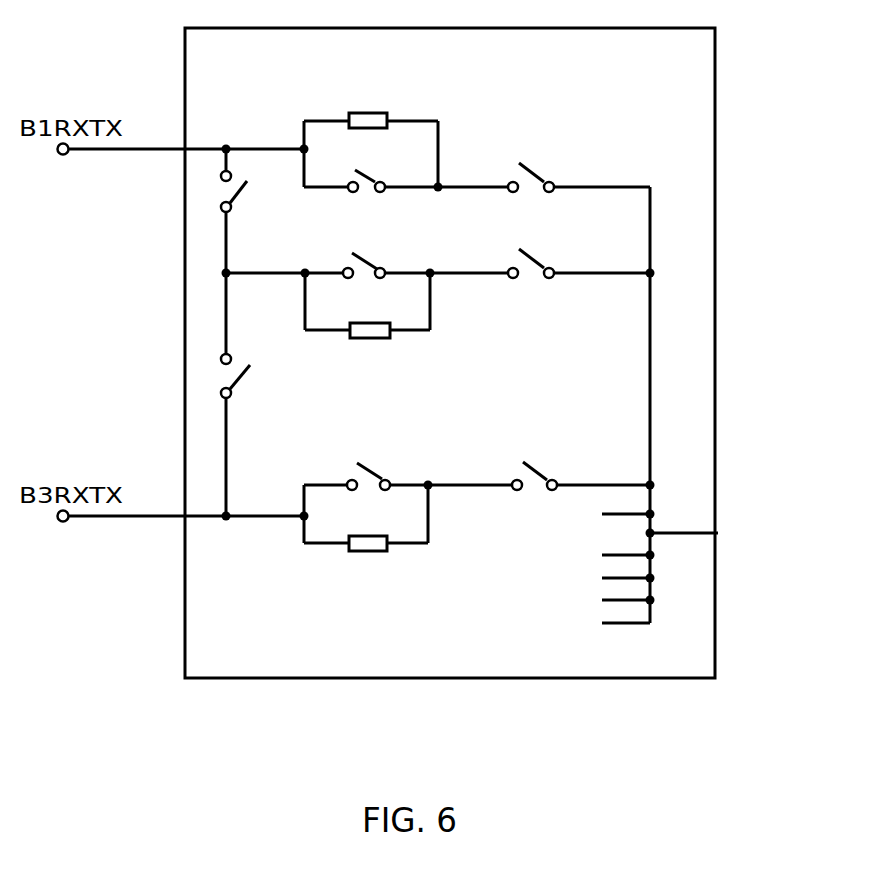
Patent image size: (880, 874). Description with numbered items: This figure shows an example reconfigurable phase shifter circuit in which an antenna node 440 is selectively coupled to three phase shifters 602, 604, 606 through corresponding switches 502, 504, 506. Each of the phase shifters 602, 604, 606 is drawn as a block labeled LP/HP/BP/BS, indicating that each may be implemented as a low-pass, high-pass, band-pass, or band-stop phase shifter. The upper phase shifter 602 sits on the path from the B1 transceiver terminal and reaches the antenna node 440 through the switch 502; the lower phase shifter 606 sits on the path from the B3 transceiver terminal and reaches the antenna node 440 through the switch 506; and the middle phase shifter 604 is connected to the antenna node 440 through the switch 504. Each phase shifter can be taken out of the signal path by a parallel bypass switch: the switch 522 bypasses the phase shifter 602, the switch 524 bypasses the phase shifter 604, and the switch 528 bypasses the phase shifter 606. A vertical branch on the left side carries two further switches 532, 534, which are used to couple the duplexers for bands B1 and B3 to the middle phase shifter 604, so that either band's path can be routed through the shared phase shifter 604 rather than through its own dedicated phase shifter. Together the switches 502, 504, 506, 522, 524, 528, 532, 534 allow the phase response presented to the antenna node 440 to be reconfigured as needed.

The phase shifter 602 is at (389, 117).
The phase shifter 604 is at (391, 336).
The phase shifter 606 is at (389, 549).
The switch 522 is at (369, 173).
The switch 524 is at (370, 270).
The switch 528 is at (372, 471).
The switch 502 is at (538, 173).
The switch 504 is at (538, 259).
The switch 506 is at (541, 471).
The switch 532 is at (240, 378).
The switch 534 is at (239, 192).
The antenna node 440 is at (714, 535).